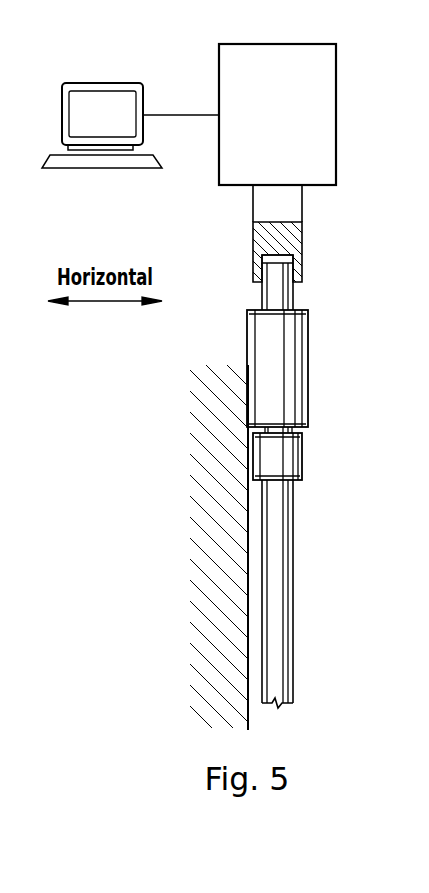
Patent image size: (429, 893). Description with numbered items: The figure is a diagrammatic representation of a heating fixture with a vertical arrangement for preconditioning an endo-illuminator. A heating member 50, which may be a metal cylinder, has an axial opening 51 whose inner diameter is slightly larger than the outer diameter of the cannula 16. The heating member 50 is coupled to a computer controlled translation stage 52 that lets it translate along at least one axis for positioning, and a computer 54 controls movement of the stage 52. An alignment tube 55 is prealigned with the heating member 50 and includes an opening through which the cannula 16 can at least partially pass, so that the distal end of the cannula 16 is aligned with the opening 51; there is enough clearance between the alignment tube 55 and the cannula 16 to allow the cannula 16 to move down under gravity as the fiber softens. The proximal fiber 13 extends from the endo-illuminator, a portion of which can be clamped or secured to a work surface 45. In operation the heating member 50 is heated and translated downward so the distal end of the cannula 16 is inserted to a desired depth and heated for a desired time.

The computer 54 is at (87, 83).
The computer controlled translation stage 52 is at (336, 116).
The heating member 50 is at (302, 238).
The axial opening 51 is at (282, 258).
The cannula 16 is at (293, 297).
The alignment tube 55 is at (308, 370).
The proximal fiber 13 is at (293, 601).
The work surface 45 is at (248, 714).